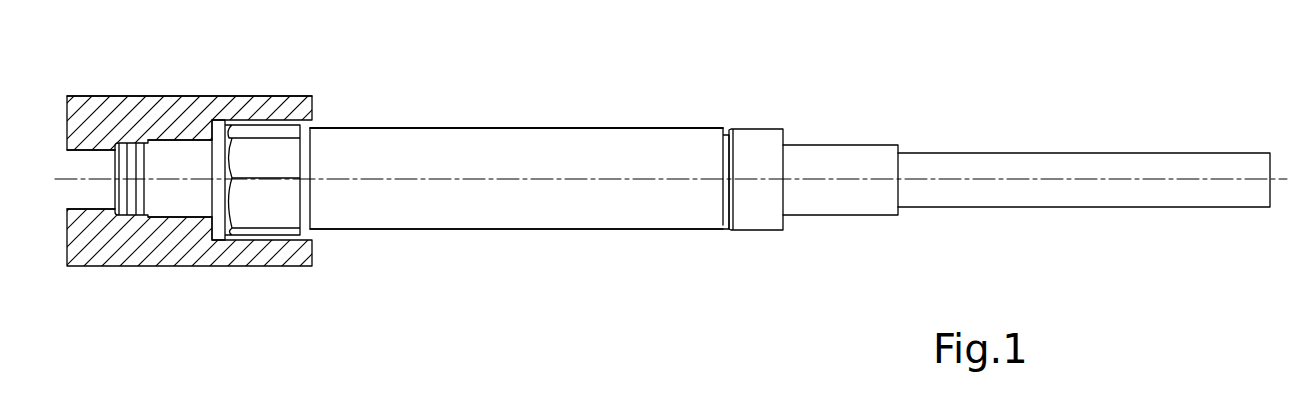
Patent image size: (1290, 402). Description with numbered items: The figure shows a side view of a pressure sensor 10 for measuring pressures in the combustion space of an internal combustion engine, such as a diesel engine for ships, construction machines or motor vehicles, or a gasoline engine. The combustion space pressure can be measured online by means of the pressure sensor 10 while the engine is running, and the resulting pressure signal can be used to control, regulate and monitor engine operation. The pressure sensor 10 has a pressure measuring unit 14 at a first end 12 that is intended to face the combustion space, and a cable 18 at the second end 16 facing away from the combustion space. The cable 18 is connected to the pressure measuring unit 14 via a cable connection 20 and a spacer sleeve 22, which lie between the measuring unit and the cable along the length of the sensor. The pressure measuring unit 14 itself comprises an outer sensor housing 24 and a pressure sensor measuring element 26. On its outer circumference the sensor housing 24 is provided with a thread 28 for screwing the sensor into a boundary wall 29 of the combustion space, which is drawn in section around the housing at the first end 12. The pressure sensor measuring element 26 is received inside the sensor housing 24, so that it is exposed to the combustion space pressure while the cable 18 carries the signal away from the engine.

The pressure sensor 10 is at (472, 247).
The first end 12 is at (113, 192).
The pressure measuring unit 14 is at (347, 243).
The second end 16 is at (1152, 223).
The cable 18 is at (1047, 192).
The cable connection 20 is at (760, 208).
The spacer sleeve 22 is at (607, 228).
The sensor housing 24 is at (277, 212).
The pressure sensor measuring element 26 is at (131, 141).
The thread 28 is at (181, 217).
The boundary wall 29 is at (186, 120).